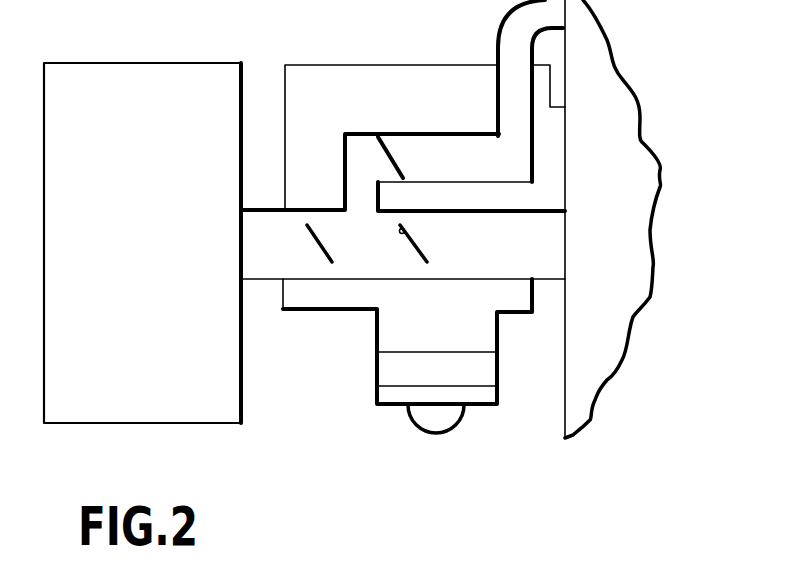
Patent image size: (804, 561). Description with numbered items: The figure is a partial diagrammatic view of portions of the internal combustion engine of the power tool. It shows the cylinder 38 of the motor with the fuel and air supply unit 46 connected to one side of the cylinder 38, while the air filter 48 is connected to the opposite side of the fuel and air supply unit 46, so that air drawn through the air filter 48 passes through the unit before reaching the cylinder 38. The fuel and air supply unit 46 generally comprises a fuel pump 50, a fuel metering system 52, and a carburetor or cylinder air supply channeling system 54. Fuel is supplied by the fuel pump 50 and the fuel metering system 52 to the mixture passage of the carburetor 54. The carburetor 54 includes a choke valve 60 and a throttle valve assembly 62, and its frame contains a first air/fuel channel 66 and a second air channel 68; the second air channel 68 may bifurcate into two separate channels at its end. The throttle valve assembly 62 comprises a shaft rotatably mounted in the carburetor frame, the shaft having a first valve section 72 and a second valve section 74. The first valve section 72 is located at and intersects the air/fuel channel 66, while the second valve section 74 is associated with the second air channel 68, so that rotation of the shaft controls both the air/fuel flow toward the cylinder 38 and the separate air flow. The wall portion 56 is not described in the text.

The cylinder 38 is at (622, 95).
The fuel and air supply unit 46 is at (448, 72).
The air filter 48 is at (108, 67).
The fuel pump 50 is at (382, 370).
The fuel metering system 52 is at (478, 405).
The carburetor 54 is at (328, 288).
The step wall 56 is at (370, 128).
The choke valve 60 is at (313, 237).
The throttle valve assembly 62 is at (446, 242).
The first air/fuel channel 66 is at (555, 262).
The second air channel 68 is at (437, 153).
The first valve section 72 is at (403, 235).
The second valve section 74 is at (378, 151).